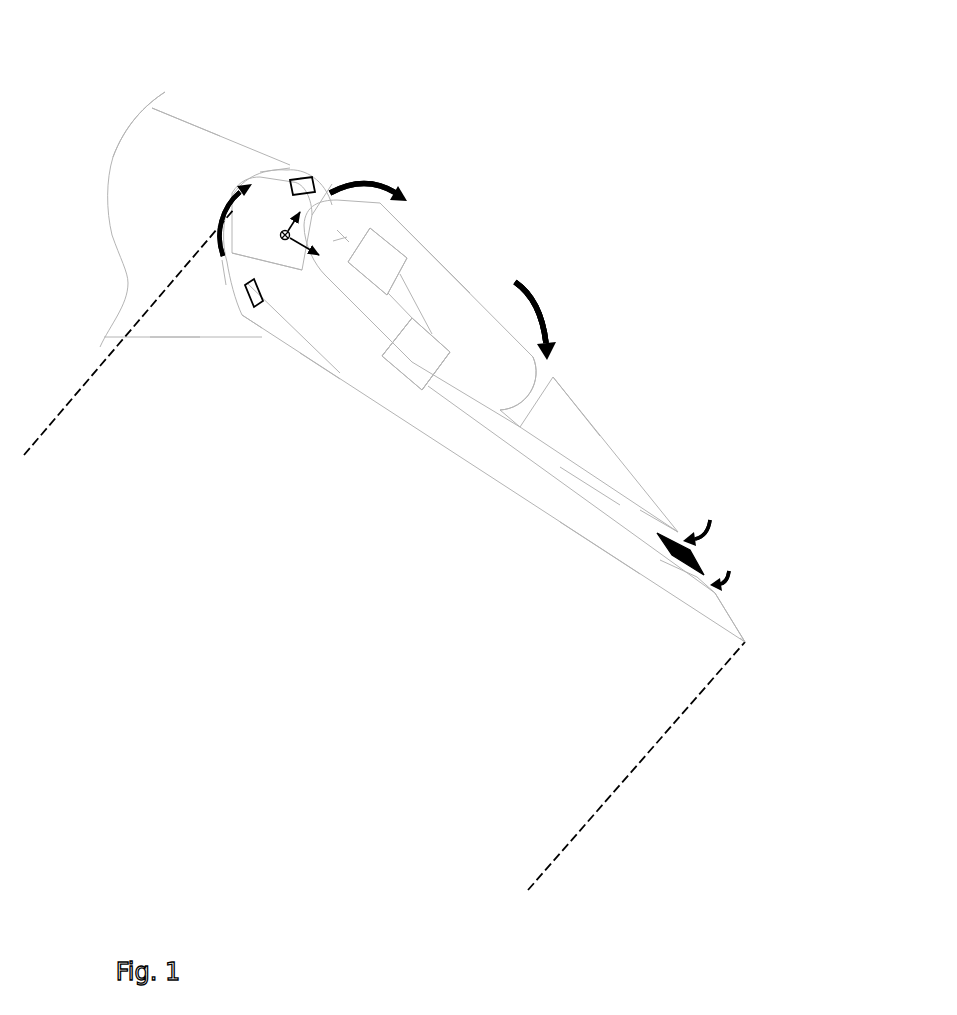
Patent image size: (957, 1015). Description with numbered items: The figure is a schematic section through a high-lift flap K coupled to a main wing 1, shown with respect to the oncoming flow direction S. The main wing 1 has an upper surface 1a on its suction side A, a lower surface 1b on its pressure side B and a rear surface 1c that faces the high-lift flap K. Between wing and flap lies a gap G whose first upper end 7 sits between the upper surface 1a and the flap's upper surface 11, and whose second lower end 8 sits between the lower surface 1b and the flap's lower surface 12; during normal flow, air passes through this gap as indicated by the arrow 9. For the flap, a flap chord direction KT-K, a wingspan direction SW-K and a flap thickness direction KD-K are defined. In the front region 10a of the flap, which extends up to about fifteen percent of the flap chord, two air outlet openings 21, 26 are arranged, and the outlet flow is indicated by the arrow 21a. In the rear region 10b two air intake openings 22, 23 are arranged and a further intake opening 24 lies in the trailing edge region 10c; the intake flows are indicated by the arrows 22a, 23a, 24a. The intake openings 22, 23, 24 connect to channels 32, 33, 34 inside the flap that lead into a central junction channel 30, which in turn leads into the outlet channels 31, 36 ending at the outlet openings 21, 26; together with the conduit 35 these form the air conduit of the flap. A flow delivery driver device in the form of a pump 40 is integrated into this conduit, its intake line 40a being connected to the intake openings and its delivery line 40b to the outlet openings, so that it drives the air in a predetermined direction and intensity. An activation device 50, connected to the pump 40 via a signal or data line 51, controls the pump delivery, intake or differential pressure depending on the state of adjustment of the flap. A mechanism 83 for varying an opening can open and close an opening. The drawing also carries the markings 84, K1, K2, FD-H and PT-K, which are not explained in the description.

The main wing 1 is at (128, 130).
The upper surface 1a is at (185, 113).
The lower surface 1b is at (178, 337).
The rear surface 1c is at (232, 276).
The first upper end 7 is at (307, 180).
The second lower end 8 is at (263, 337).
The arrow 9 is at (223, 213).
The front region 10a is at (277, 180).
The rear region 10b is at (598, 553).
The trailing edge region 10c is at (707, 620).
The upper surface 11 is at (590, 382).
The lower surface 12 is at (325, 390).
The air outlet opening 21 is at (325, 182).
The arrow 21a is at (362, 186).
The air intake opening 22 is at (548, 373).
The arrow 22a is at (530, 290).
The air intake opening 23 is at (670, 533).
The arrow 23a is at (709, 520).
The air intake opening 24 is at (703, 573).
The arrow 24a is at (729, 572).
The air outlet opening 26 is at (235, 265).
The junction channel 30 is at (470, 393).
The outlet channel 31 is at (310, 213).
The channel 32 is at (579, 393).
The channel 33 is at (652, 530).
The channel 34 is at (677, 572).
The air conduit 35 is at (592, 487).
The outlet channel 36 is at (280, 270).
The pump 40 is at (412, 362).
The intake line 40a is at (438, 376).
The delivery line 40b is at (393, 337).
The activation device 50 is at (378, 255).
The signal or data line 51 is at (408, 280).
The mechanism for varying an opening 83 is at (243, 290).
The sensor 84 is at (315, 181).
The high-lift flap K is at (383, 400).
The first wing end K1 is at (226, 224).
The second wing end K2 is at (747, 641).
The gap G is at (265, 175).
The flow direction S is at (170, 33).
The suction side A is at (725, 183).
The pressure side B is at (70, 737).
The flight direction FD-H is at (95, 190).
The wing pivot axis PT-K is at (527, 888).
The flap thickness direction KD-K is at (279, 215).
The wingspan direction SW-K is at (264, 229).
The flap chord direction KT-K is at (290, 248).